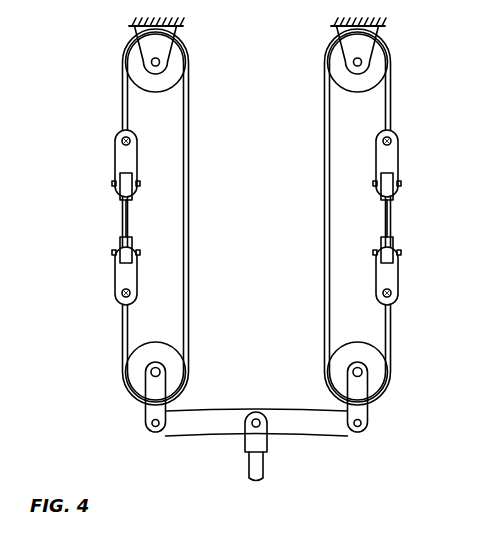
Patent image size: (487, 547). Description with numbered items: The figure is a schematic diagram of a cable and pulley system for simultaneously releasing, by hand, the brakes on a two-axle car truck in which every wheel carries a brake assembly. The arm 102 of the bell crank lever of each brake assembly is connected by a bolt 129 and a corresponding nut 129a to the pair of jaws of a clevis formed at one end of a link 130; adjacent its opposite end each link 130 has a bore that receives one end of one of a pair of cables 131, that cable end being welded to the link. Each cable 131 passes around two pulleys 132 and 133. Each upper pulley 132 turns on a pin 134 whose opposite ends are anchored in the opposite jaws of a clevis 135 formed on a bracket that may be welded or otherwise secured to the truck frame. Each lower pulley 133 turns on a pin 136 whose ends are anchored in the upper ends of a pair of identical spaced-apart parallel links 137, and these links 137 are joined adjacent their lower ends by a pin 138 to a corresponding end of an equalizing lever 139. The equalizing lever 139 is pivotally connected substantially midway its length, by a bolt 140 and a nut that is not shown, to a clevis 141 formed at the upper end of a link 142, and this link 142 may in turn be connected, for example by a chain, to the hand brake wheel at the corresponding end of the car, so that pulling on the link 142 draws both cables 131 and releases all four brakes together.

The arm 102 is at (393, 237).
The bolt 129 is at (397, 253).
The nut 129a is at (364, 232).
The link 130 is at (394, 288).
The cables 131 is at (324, 237).
The pulley 132 is at (342, 80).
The pulley 133 is at (337, 362).
The pin 134 is at (354, 62).
The clevis 135 is at (343, 35).
The pin 136 is at (353, 372).
The links 137 is at (353, 387).
The pin 138 is at (363, 446).
The equalizing lever 139 is at (193, 428).
The bolt 140 is at (263, 427).
The clevis 141 is at (248, 443).
The link 142 is at (262, 465).